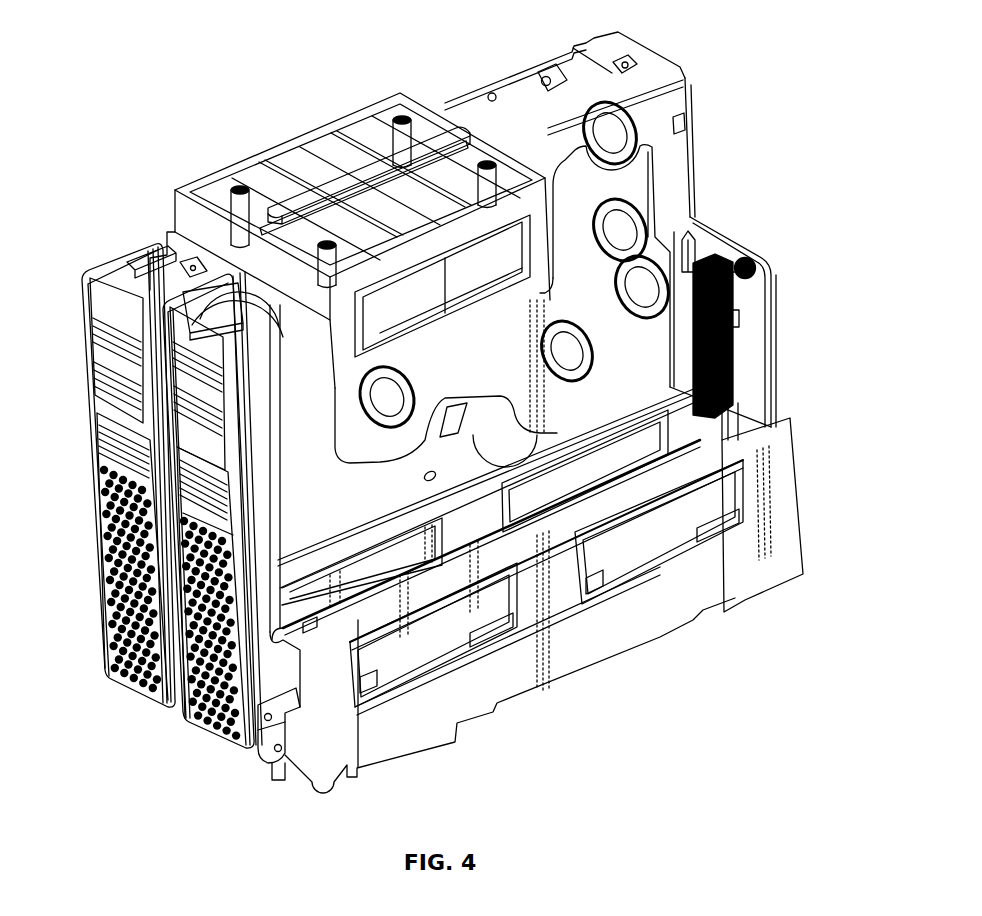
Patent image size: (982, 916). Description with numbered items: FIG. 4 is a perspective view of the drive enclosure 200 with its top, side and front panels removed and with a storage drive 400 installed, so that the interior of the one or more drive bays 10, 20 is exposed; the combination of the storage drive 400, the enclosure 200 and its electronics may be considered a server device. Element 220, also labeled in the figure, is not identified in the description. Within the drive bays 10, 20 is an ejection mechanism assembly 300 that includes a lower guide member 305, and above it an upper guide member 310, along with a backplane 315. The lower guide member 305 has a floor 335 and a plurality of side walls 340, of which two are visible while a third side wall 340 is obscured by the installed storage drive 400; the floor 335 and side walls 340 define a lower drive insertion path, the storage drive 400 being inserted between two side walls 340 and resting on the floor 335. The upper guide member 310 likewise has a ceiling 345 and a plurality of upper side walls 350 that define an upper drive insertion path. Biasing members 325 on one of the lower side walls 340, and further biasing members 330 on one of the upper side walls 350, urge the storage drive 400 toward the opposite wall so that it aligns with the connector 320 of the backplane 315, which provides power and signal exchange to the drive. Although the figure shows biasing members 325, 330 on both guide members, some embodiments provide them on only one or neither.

The drive enclosure 200 is at (143, 58).
The drive bay 10 is at (436, 252).
The drive bay 20 is at (501, 637).
The battery cartridge 220 is at (115, 682).
The ejection mechanism assembly 300 is at (335, 740).
The lower guide member 305 is at (372, 757).
The upper guide member 310 is at (277, 140).
The backplane 315 is at (761, 298).
The connector 320 is at (748, 520).
The biasing member 325 is at (387, 570).
The biasing member 330 is at (540, 233).
The floor 335 is at (287, 675).
The side wall 340 is at (352, 550).
The ceiling 345 is at (207, 222).
The upper side wall 350 is at (175, 268).
The storage drive 400 is at (555, 67).